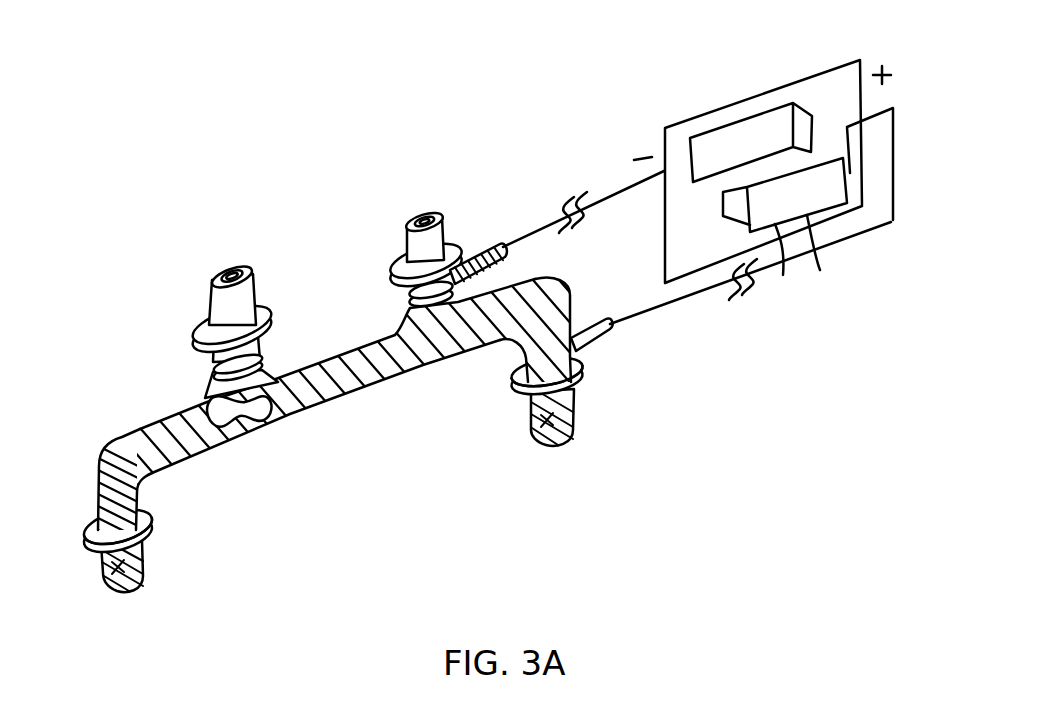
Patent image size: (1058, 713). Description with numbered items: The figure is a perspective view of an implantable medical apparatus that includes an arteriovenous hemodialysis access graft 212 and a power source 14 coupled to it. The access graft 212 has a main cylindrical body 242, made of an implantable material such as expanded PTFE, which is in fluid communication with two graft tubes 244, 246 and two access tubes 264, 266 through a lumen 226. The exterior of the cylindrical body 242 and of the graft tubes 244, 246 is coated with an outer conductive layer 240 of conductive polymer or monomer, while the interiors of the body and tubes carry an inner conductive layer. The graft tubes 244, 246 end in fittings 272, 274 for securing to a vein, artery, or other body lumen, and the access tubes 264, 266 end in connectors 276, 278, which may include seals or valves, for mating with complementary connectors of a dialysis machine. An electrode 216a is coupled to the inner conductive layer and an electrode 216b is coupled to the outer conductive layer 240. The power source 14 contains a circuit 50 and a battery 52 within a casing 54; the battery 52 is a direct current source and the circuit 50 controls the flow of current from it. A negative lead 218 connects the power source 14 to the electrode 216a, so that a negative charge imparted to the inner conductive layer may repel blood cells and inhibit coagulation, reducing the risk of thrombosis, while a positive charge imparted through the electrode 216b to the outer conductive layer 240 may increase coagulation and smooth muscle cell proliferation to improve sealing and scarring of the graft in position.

The power source 14 is at (773, 78).
The circuit 50 is at (708, 133).
The battery 52 is at (783, 275).
The casing 54 is at (820, 270).
The arteriovenous hemodialysis access graft 212 is at (113, 405).
The electrode 216a is at (494, 246).
The electrode 216b is at (612, 333).
The negative lead 218 is at (602, 205).
The lumen 226 is at (237, 266).
The outer conductive layer 240 is at (360, 380).
The main cylindrical body 242 is at (247, 412).
The graft tube 244 is at (537, 342).
The graft tube 246 is at (104, 482).
The access tube 264 is at (409, 302).
The access tube 266 is at (207, 360).
The fitting 272 is at (527, 420).
The fitting 274 is at (147, 548).
The connector 276 is at (399, 256).
The connector 278 is at (266, 303).